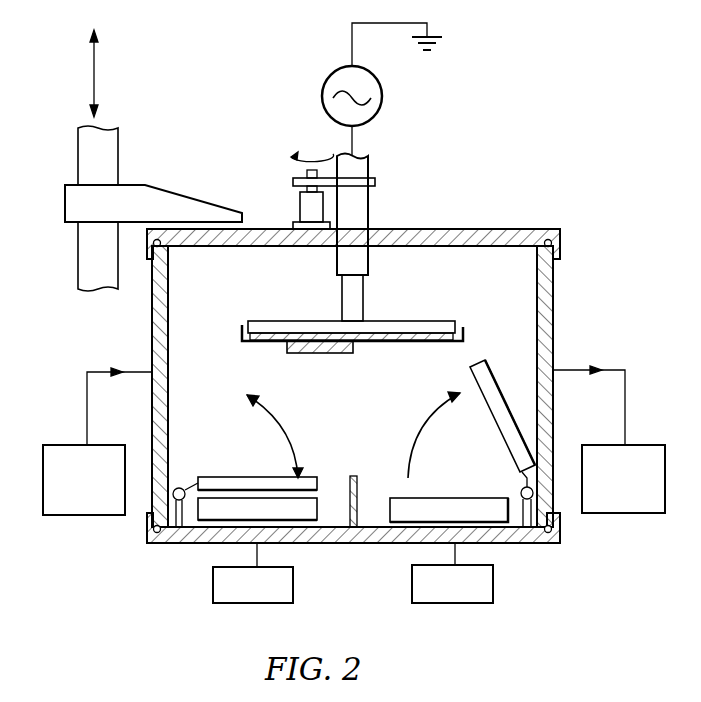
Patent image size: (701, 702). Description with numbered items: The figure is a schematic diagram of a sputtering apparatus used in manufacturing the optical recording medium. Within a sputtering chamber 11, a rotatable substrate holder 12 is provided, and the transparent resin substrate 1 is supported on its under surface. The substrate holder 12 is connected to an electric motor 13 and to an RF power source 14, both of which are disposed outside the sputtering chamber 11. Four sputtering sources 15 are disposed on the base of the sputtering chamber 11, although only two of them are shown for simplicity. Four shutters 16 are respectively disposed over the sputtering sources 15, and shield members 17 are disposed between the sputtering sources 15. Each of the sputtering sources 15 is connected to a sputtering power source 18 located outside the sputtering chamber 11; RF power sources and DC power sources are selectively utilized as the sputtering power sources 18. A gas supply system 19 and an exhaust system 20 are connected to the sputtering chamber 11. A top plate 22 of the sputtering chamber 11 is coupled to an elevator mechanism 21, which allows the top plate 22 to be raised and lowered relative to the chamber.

The transparent resin substrate 1 is at (313, 353).
The sputtering chamber 11 is at (553, 300).
The substrate holder 12 is at (412, 321).
The electric motor 13 is at (303, 207).
The RF power source 14 is at (323, 90).
The sputtering source 15 is at (217, 513).
The shutter 16 is at (240, 477).
The shield member 17 is at (358, 487).
The sputtering power source 18 is at (283, 583).
The gas supply system 19 is at (68, 453).
The exhaust system 20 is at (607, 453).
The elevator mechanism 21 is at (68, 185).
The top plate 22 is at (247, 246).